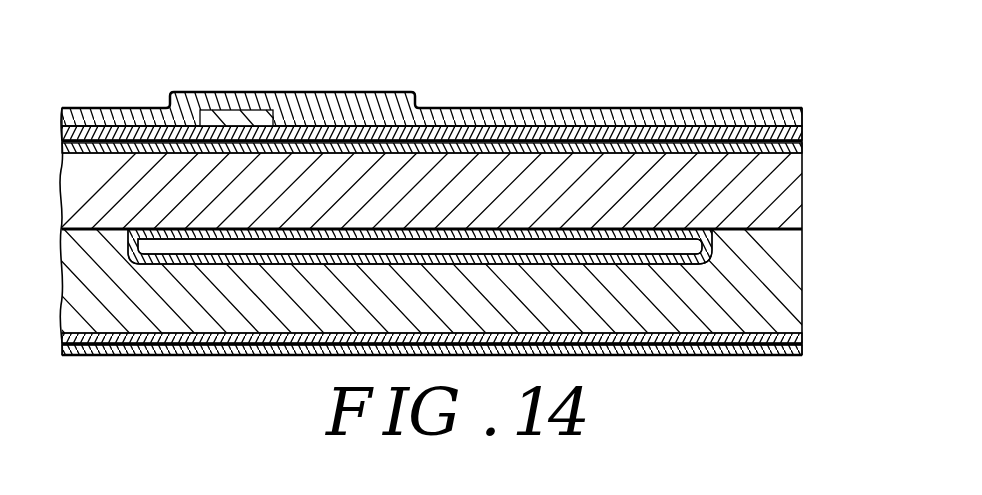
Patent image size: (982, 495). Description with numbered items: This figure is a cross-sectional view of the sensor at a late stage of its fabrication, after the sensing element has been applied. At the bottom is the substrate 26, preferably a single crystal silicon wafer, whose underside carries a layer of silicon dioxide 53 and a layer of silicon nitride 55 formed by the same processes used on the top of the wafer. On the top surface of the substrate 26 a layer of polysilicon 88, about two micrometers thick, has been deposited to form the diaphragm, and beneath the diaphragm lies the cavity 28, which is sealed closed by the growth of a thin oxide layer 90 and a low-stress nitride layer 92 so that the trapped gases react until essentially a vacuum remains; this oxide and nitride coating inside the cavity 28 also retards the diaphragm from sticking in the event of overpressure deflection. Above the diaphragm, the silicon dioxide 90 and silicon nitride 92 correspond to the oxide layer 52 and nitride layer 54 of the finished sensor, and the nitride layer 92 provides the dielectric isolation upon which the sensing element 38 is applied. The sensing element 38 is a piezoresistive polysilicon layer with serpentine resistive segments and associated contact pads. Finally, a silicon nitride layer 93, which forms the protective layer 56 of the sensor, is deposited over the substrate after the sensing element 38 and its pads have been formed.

The sensing element 38 is at (258, 117).
The protective layer 56 is at (486, 80).
The silicon nitride layer 93 is at (486, 80).
The silicon nitride layer 54 is at (486, 127).
The silicon nitride layer 92 is at (805, 134).
The silicon dioxide layer 52 is at (486, 156).
The silicon dioxide layer 90 is at (805, 150).
The polysilicon layer 88 is at (803, 200).
The cavity 28 is at (708, 258).
The substrate 26 is at (803, 296).
The silicon dioxide layer 53 is at (805, 335).
The silicon nitride layer 55 is at (805, 348).